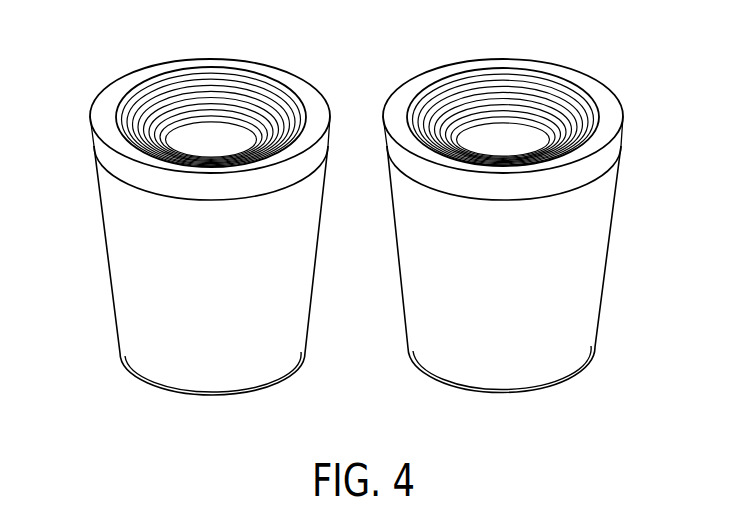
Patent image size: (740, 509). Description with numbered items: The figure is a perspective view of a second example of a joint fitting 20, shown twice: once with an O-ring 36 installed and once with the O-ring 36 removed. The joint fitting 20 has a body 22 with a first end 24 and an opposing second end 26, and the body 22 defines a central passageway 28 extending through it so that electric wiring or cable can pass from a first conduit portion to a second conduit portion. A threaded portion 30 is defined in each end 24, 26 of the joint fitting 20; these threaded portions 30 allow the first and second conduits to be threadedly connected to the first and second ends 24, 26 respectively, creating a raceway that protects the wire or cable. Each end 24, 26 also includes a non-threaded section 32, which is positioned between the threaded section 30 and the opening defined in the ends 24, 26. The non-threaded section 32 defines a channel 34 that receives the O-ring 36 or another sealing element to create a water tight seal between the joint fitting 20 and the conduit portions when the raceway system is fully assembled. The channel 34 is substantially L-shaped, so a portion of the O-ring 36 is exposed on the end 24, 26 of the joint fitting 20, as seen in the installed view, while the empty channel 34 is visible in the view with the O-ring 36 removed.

The joint fitting 20 is at (113, 372).
The body 22 is at (125, 281).
The first end 24 is at (102, 80).
The second end 26 is at (212, 404).
The central passageway 28 is at (243, 123).
The threaded portion 30 is at (208, 95).
The non-threaded section 32 is at (592, 96).
The channel 34 is at (538, 87).
The O-ring 36 is at (165, 79).